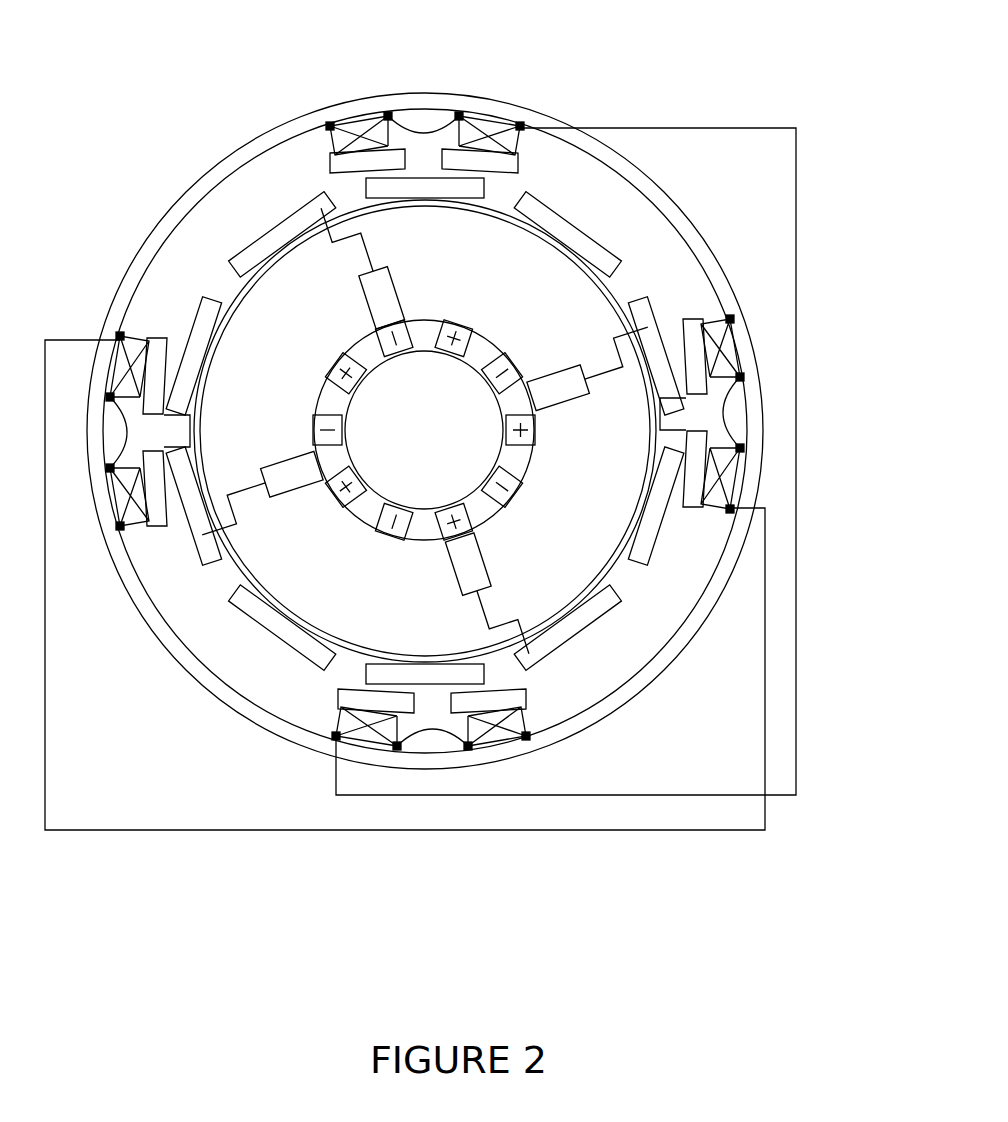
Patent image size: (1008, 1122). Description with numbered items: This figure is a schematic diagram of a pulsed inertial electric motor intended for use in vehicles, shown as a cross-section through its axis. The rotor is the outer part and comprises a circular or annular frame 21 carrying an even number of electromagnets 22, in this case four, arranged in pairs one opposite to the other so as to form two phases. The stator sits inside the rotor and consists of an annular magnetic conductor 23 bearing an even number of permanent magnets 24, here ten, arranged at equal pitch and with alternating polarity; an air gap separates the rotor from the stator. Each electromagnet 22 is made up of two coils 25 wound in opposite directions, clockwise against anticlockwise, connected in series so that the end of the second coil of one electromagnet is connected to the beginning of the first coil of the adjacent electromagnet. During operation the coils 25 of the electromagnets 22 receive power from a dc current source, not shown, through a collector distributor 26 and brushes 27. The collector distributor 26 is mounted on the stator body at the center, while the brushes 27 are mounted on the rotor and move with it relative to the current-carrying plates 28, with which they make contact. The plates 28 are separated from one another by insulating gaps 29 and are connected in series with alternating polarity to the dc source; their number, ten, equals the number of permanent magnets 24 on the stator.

The circular or annular frame 21 is at (237, 160).
The electromagnets 22 is at (444, 99).
The annular magnetic conductor 23 is at (612, 287).
The permanent magnets 24 is at (612, 592).
The coils 25 is at (358, 135).
The collector distributor 26 is at (487, 340).
The brushes 27 is at (465, 570).
The current-carrying plates 28 is at (340, 372).
The insulating gaps 29 is at (417, 530).